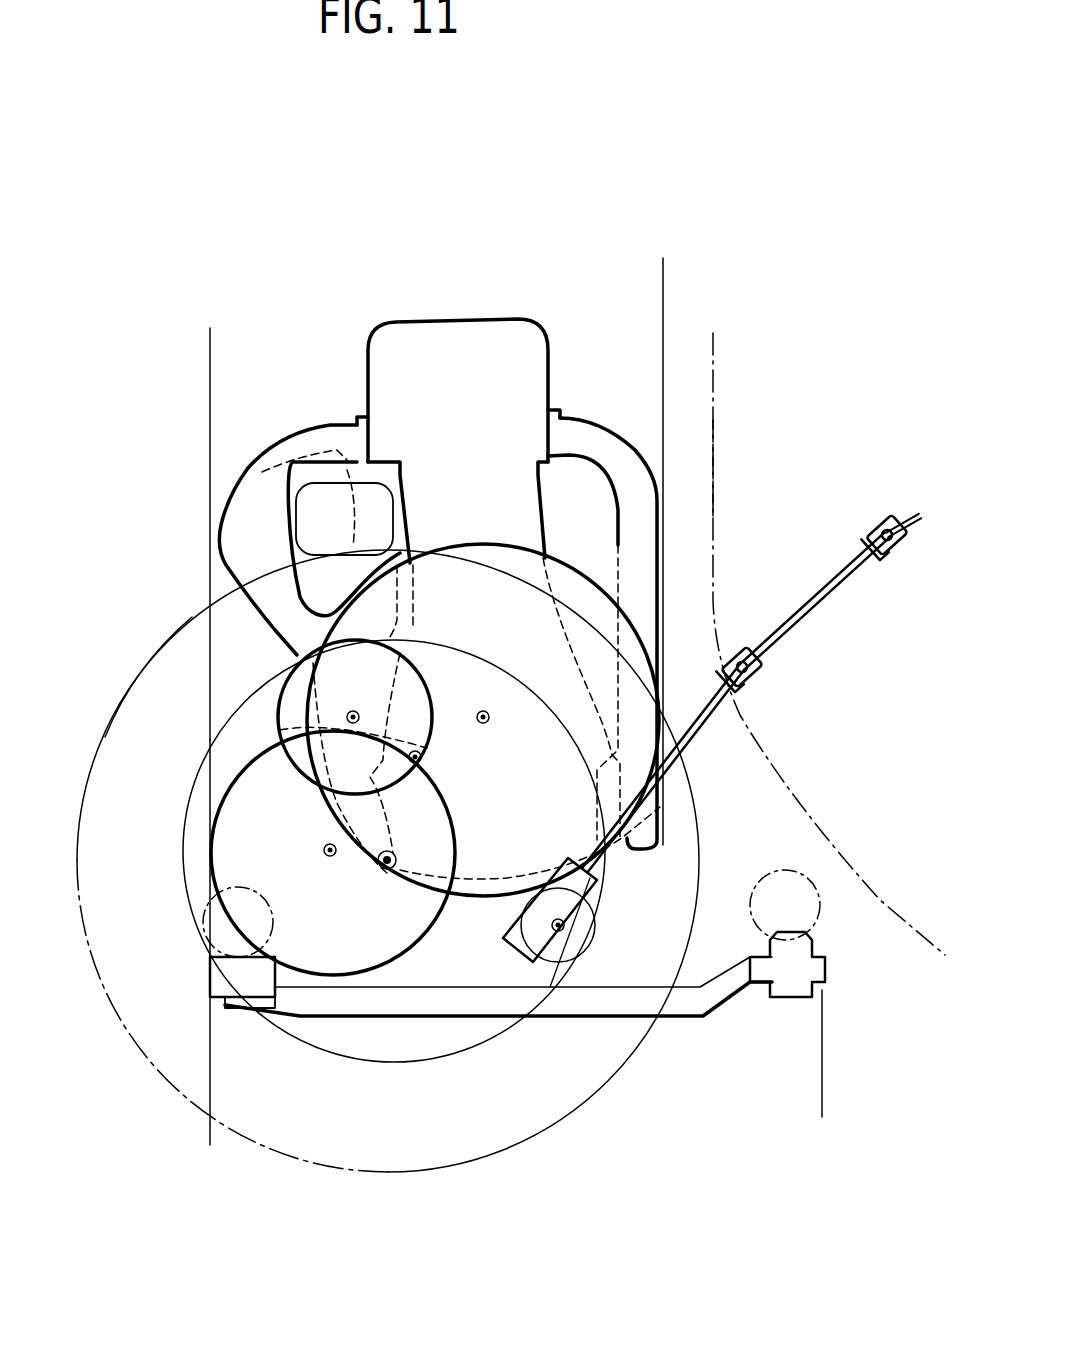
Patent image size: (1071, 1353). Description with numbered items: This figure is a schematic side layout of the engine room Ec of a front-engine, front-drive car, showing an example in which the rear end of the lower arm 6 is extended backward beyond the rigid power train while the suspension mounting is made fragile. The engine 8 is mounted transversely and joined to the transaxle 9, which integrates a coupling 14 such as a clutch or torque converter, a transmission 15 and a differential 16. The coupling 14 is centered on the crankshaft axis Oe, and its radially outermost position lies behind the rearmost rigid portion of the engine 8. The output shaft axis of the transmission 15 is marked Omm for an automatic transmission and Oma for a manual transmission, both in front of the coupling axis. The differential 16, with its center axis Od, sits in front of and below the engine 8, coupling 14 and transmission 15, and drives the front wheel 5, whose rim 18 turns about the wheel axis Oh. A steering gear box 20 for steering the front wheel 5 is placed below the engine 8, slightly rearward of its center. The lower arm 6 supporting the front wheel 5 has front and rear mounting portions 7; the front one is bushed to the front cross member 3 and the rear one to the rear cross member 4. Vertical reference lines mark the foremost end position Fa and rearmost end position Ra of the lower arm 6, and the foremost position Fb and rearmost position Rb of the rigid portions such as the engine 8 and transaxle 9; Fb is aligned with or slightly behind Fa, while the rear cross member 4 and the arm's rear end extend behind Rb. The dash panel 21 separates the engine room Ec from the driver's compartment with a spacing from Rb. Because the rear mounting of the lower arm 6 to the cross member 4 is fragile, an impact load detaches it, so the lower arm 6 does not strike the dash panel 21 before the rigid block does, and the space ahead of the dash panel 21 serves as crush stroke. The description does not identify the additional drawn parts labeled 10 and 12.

The front cross member 3 is at (225, 898).
The rear cross member 4 is at (768, 872).
The front wheel 5 is at (583, 1107).
The lower arm 6 is at (485, 1002).
The mounting portion 7 is at (230, 977).
The engine 8 is at (538, 371).
The transaxle 9 is at (274, 667).
The intake device 10 is at (290, 430).
The exhaust pipe 12 is at (587, 430).
The coupling 14 is at (593, 573).
The transmission 15 is at (278, 712).
The differential 16 is at (233, 930).
The rim 18 is at (316, 1055).
The steering gear box 20 is at (596, 928).
The dash panel 21 is at (715, 422).
The center axis of manual transmission output shaft Oma is at (360, 714).
The center axis of crankshaft Oe is at (487, 712).
The center axis of automatic transmission output shaft Omm is at (422, 757).
The center axis of differential Od is at (323, 848).
The center axis of front wheel Oh is at (382, 868).
The foremost end position of lower arm Fa is at (211, 959).
The foremost end position of rigid portions Fb is at (211, 514).
The rearmost end position of lower arm Ra is at (822, 1074).
The rearmost end position of rigid portions Rb is at (664, 533).
The engine room Ec is at (690, 482).